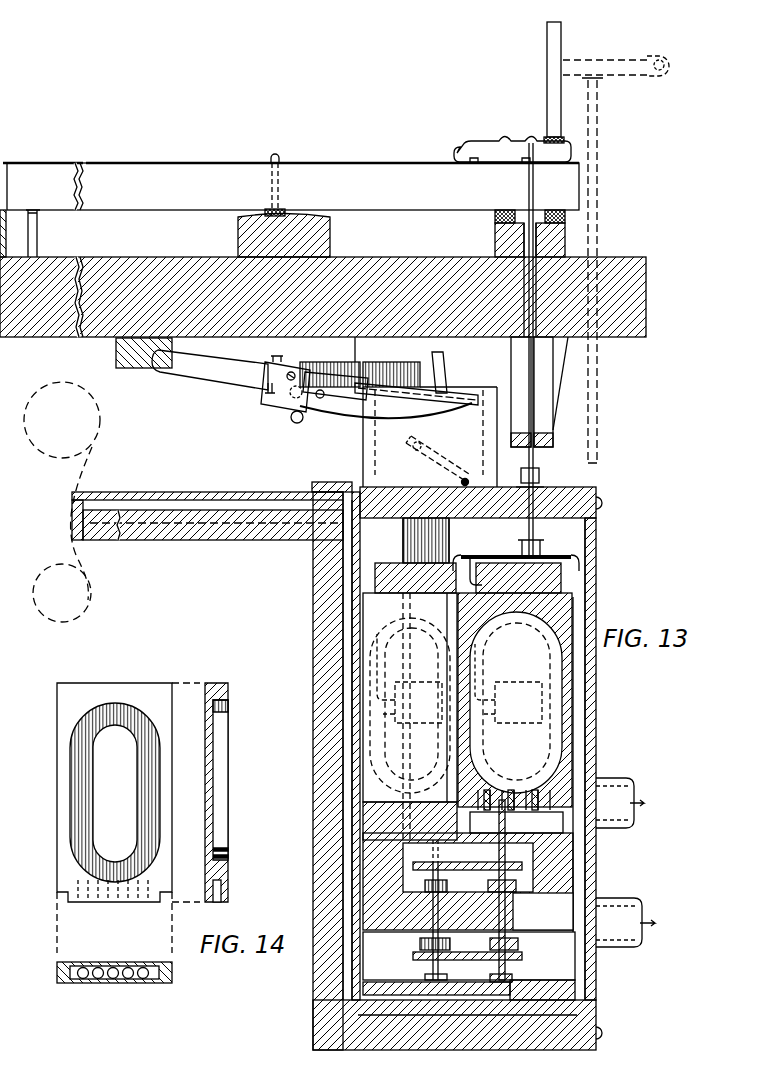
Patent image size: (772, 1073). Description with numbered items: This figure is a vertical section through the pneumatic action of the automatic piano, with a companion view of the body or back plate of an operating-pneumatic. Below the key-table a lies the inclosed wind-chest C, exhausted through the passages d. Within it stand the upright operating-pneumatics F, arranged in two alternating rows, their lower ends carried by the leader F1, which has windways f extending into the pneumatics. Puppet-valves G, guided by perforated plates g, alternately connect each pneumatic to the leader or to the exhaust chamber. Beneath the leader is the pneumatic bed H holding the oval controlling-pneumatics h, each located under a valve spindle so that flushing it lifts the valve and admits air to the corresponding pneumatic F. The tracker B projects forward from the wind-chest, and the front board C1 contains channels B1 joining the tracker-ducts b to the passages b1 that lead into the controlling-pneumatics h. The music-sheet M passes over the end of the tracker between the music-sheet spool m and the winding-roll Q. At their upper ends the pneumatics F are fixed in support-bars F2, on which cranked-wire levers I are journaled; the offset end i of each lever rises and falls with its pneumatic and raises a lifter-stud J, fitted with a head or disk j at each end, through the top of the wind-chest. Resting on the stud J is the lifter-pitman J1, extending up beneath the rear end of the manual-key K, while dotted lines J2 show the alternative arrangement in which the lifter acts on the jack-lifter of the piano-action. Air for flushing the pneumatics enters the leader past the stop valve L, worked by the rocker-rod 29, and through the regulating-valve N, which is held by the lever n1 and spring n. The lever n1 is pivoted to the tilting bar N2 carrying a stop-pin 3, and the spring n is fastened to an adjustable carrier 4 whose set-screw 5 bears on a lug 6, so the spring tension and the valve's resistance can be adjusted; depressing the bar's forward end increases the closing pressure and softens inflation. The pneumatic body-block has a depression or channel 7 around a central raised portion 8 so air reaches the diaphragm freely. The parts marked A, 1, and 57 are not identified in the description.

In FIG. 13, the manual-key K is at (291, 182).
In FIG. 13, the key-table a is at (323, 297).
In FIG. 13, the rod A is at (512, 91).
In FIG. 13, the lifter-stud J is at (520, 538).
In FIG. 13, the lifter-pitman J1 is at (539, 392).
In FIG. 13, the alternative lifter position J2 is at (600, 270).
In FIG. 13, the head or disk j is at (528, 509).
In FIG. 13, the end of cranked-wire lever i is at (550, 544).
In FIG. 13, the cranked-wire lever I is at (607, 575).
In FIG. 13, the bracket end 1 is at (370, 574).
In FIG. 13, the regulating-valve N is at (398, 412).
In FIG. 13, the tilting bar N2 is at (210, 370).
In FIG. 13, the spring n is at (386, 420).
In FIG. 13, the lever n1 is at (416, 395).
In FIG. 13, the stop valve L is at (437, 461).
In FIG. 13, the rocker-rod 29 is at (464, 480).
In FIG. 13, the stop-pin 3 is at (335, 386).
In FIG. 13, the adjustable block or carrier 4 is at (289, 405).
In FIG. 13, the set-screw 5 is at (266, 396).
In FIG. 13, the lug 6 is at (281, 348).
In FIG. 13, the support block 57 is at (128, 368).
In FIG. 13, the winding-roll Q is at (62, 420).
In FIG. 13, the music-sheet spool m is at (62, 593).
In FIG. 13, the music-sheet M is at (57, 523).
In FIG. 13, the tracker B is at (207, 530).
In FIG. 13, the tracker-duct b is at (190, 508).
In FIG. 13, the channel or windway B1 is at (346, 800).
In FIG. 13, the passage in pneumatic bed b1 is at (350, 998).
In FIG. 13, the wind-chest C is at (597, 717).
In FIG. 13, the front board of wind-chest C1 is at (316, 697).
In FIG. 13, the operating-pneumatic F is at (467, 716).
In FIG. 14, the operating-pneumatic F is at (128, 818).
In FIG. 13, the leader F1 is at (469, 906).
In FIG. 13, the support-bar F2 is at (564, 588).
In FIG. 13, the passage or windway f is at (470, 868).
In FIG. 13, the perforated plate g is at (404, 956).
In FIG. 13, the puppet-valve G is at (476, 915).
In FIG. 13, the controlling-pneumatic h is at (481, 971).
In FIG. 13, the pneumatic bed H is at (560, 993).
In FIG. 13, the exhaust passage d is at (626, 858).
In FIG. 14, the depression or channel 7 is at (80, 760).
In FIG. 14, the central raised portion 8 is at (104, 992).